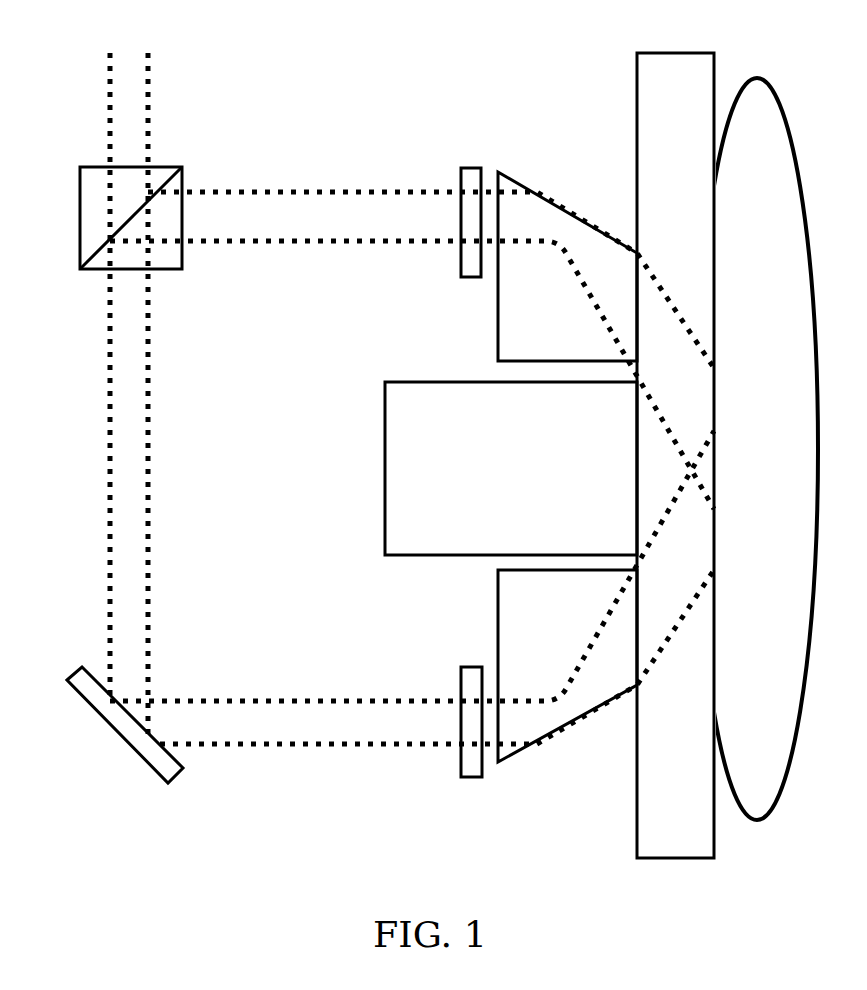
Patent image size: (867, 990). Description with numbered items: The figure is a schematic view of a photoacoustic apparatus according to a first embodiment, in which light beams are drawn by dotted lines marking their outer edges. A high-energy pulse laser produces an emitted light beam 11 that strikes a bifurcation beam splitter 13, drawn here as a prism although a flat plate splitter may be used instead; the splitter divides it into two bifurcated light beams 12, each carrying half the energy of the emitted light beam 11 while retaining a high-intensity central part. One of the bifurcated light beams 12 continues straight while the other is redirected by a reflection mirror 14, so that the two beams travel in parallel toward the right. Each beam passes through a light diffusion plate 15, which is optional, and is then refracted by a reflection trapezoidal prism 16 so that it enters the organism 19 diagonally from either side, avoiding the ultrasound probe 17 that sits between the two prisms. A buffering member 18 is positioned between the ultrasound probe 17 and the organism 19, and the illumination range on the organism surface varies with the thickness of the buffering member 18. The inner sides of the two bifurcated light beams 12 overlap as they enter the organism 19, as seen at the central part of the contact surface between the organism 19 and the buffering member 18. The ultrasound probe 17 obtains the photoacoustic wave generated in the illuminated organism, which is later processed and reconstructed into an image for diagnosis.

The emitted light beam 11 is at (123, 140).
The bifurcated light beams 12 is at (325, 218).
The bifurcation beam splitter 13 is at (98, 228).
The reflection mirror 14 is at (83, 672).
The light diffusion plate 15 is at (470, 166).
The reflection trapezoidal prism 16 is at (537, 215).
The ultrasound probe 17 is at (398, 493).
The buffering member 18 is at (663, 166).
The organism 19 is at (775, 165).